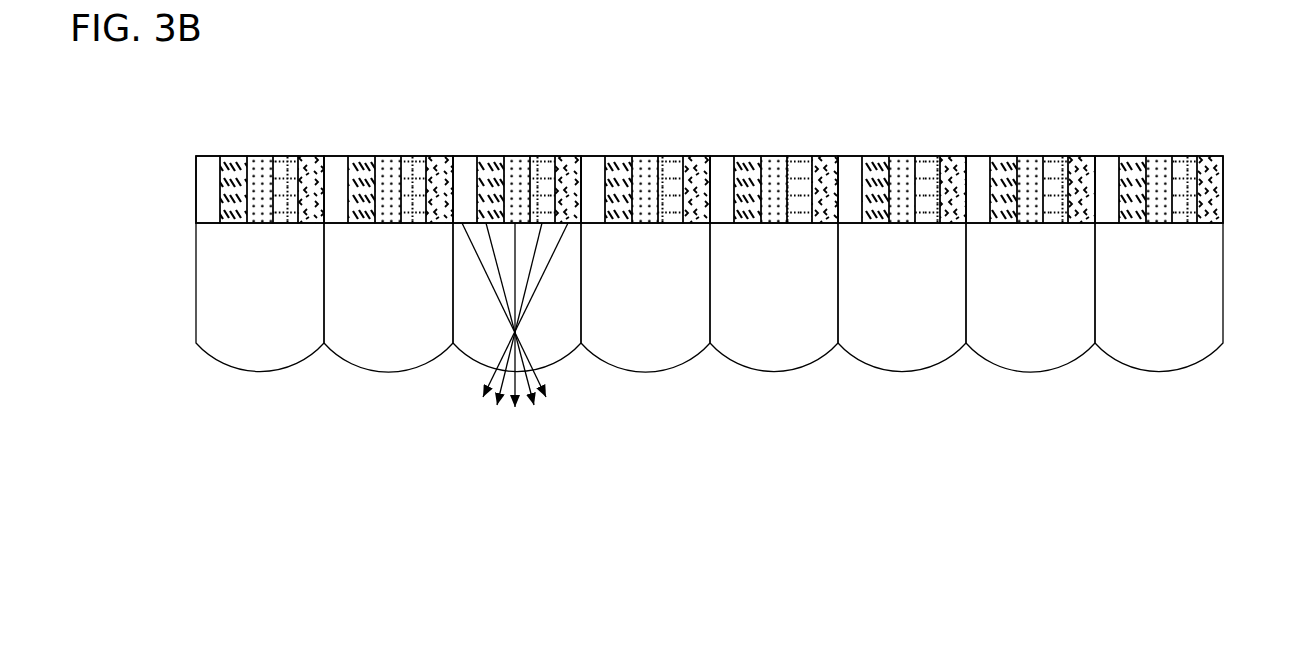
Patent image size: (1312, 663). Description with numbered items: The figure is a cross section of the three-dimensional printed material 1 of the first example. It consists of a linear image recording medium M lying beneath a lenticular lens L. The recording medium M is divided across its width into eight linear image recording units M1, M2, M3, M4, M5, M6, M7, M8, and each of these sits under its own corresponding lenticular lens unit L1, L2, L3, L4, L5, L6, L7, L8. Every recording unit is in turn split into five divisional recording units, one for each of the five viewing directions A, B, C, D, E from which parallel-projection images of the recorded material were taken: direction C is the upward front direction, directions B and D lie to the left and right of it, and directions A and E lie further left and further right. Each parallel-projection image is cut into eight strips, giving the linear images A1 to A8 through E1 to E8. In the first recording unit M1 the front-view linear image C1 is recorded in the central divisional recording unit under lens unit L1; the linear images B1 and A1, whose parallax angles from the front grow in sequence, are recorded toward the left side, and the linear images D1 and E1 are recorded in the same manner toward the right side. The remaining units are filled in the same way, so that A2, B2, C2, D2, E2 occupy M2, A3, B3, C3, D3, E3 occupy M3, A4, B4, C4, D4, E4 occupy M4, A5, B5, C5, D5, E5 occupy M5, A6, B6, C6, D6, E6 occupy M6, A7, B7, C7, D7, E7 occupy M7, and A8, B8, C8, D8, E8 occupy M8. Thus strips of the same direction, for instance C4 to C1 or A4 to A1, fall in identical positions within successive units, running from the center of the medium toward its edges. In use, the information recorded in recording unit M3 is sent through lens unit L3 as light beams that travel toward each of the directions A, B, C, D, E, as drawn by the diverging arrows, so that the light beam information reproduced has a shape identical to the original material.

The three-dimensional printed material 1 is at (1254, 101).
The linear image recording medium M is at (1236, 190).
The lenticular lens L is at (1236, 291).
The linear image recording unit M1 is at (197, 96).
The linear image recording unit M2 is at (452, 96).
The linear image recording unit M3 is at (454, 96).
The linear image recording unit M4 is at (709, 96).
The linear image recording unit M5 is at (711, 96).
The linear image recording unit M6 is at (839, 96).
The linear image recording unit M7 is at (1094, 96).
The linear image recording unit M8 is at (1096, 96).
The lenticular lens unit L1 is at (260, 297).
The lenticular lens unit L2 is at (388, 297).
The lenticular lens unit L3 is at (517, 297).
The lenticular lens unit L4 is at (645, 297).
The lenticular lens unit L5 is at (774, 297).
The lenticular lens unit L6 is at (902, 297).
The lenticular lens unit L7 is at (1030, 297).
The lenticular lens unit L8 is at (1159, 297).
The linear image A1 is at (208, 176).
The linear image B1 is at (233, 176).
The linear image C1 is at (260, 176).
The linear image D1 is at (285, 176).
The linear image E1 is at (310, 176).
The linear image A2 is at (336, 176).
The linear image B2 is at (361, 176).
The linear image C2 is at (388, 176).
The linear image D2 is at (413, 176).
The linear image E2 is at (438, 176).
The linear image A3 is at (465, 176).
The linear image B3 is at (490, 176).
The linear image C3 is at (517, 176).
The linear image D3 is at (542, 176).
The linear image E3 is at (567, 176).
The linear image A4 is at (593, 176).
The linear image B4 is at (618, 176).
The linear image C4 is at (645, 176).
The linear image D4 is at (670, 176).
The linear image E4 is at (695, 176).
The linear image A5 is at (722, 176).
The linear image B5 is at (747, 176).
The linear image C5 is at (774, 176).
The linear image D5 is at (799, 176).
The linear image E5 is at (824, 176).
The linear image A6 is at (850, 176).
The linear image B6 is at (875, 176).
The linear image C6 is at (902, 176).
The linear image D6 is at (927, 176).
The linear image E6 is at (952, 176).
The linear image A7 is at (978, 176).
The linear image B7 is at (1003, 176).
The linear image C7 is at (1030, 176).
The linear image D7 is at (1055, 176).
The linear image E7 is at (1080, 176).
The linear image A8 is at (1107, 176).
The linear image B8 is at (1132, 176).
The linear image C8 is at (1159, 176).
The linear image D8 is at (1184, 176).
The linear image E8 is at (1209, 176).
The direction A is at (511, 326).
The direction B is at (514, 336).
The direction C is at (516, 337).
The direction D is at (516, 336).
The direction E is at (519, 326).